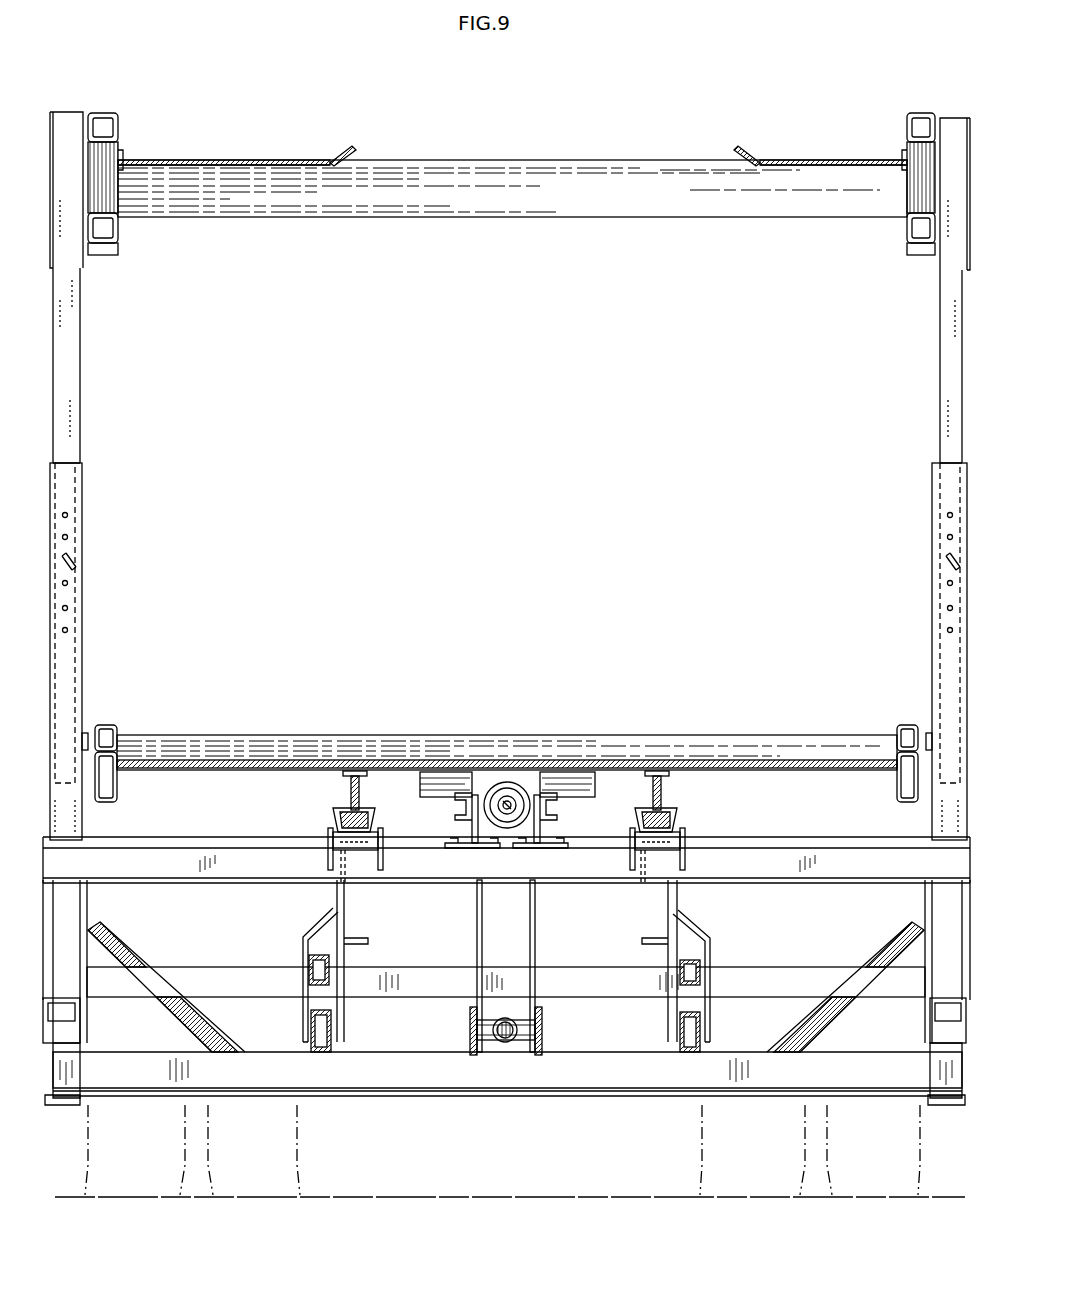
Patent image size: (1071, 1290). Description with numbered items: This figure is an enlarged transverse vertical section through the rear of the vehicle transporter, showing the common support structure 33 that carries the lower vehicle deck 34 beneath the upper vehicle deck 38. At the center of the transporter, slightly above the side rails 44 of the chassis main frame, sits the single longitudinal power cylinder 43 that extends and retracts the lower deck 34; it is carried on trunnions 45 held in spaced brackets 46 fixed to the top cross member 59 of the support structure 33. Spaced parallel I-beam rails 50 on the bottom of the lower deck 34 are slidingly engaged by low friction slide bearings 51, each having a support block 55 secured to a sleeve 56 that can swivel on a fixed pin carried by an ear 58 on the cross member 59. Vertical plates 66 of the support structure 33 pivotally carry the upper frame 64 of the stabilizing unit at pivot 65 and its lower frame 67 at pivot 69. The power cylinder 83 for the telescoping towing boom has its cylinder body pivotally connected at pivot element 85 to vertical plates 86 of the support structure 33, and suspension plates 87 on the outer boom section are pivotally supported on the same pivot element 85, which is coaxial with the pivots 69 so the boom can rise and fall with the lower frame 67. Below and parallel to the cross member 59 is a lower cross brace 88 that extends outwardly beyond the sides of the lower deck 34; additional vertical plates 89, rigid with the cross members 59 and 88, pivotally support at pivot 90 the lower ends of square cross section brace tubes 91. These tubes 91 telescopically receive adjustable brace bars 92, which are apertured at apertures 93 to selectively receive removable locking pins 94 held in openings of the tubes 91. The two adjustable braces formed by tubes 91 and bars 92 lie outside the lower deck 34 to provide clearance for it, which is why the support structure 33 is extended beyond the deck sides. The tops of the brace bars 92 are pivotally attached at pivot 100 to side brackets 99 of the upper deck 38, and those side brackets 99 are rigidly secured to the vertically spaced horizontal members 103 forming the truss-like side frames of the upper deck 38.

The common support structure 33 is at (800, 840).
The lower vehicle deck 34 is at (757, 738).
The upper vehicle deck 38 is at (786, 158).
The longitudinal power cylinder 43 is at (512, 790).
The side rails 44 is at (345, 905).
The trunnions 45 is at (535, 806).
The brackets 46 is at (468, 822).
The I-beam rails 50 is at (350, 788).
The slide bearings 51 is at (332, 814).
The support block 55 is at (378, 830).
The sleeve 56 is at (340, 850).
The ear 58 is at (383, 855).
The top cross member 59 is at (192, 848).
The upper frame 64 is at (305, 955).
The pivot 65 is at (330, 968).
The vertical plates 66 is at (303, 1018).
The lower frame 67 is at (312, 1050).
The pivot 69 is at (310, 1032).
The power cylinder 83 is at (497, 1045).
The pivot element 85 is at (470, 1030).
The vertical plates 86 is at (530, 942).
The suspension plates 87 is at (470, 1014).
The lower cross brace 88 is at (506, 987).
The vertical plates 89 is at (60, 920).
The pivot 90 is at (80, 1025).
The brace tubes 91 is at (82, 700).
The adjustable brace bars 92 is at (80, 382).
The apertures 93 is at (75, 583).
The locking pins 94 is at (76, 560).
The side brackets 99 is at (52, 118).
The pivot 100 is at (118, 150).
The horizontal members 103 is at (115, 116).